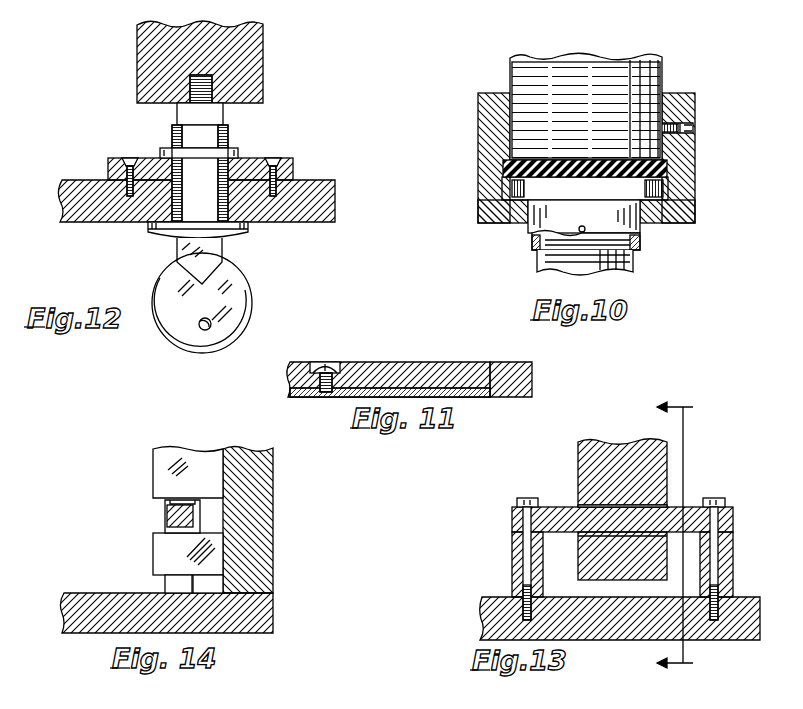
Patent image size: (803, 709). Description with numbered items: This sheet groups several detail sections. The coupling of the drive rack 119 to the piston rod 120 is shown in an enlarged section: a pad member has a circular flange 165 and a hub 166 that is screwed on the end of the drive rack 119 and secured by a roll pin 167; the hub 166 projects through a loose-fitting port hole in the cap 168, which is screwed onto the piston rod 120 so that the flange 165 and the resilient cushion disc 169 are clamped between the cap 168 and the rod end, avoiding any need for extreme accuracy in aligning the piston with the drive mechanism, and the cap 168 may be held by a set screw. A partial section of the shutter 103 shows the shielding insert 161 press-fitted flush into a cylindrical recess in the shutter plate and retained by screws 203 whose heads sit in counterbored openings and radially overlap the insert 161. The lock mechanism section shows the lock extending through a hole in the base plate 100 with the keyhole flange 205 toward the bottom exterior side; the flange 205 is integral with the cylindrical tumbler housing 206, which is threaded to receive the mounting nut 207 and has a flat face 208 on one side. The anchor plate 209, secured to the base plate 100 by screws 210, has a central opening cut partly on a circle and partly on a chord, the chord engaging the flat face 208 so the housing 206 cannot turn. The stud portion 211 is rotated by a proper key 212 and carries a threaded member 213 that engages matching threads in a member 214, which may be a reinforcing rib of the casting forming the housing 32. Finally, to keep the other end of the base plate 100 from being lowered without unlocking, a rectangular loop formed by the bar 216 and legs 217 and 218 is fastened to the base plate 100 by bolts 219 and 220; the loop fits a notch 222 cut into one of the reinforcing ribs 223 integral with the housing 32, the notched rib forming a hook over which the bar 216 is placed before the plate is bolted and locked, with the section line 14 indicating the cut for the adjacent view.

In FIG. 12, the base plate 100 is at (90, 212).
In FIG. 14, the base plate 100 is at (267, 623).
In FIG. 13, the base plate 100 is at (502, 608).
In FIG. 12, the member 214 is at (257, 53).
In FIG. 12, the threaded member 213 is at (213, 82).
In FIG. 12, the stud portion 211 is at (220, 115).
In FIG. 12, the flat face 208 is at (200, 138).
In FIG. 12, the cylindrical tumbler housing 206 is at (230, 135).
In FIG. 12, the mounting nut 207 is at (237, 153).
In FIG. 12, the anchor plate 209 is at (107, 163).
In FIG. 12, the screws 210 is at (133, 157).
In FIG. 12, the keyhole flange 205 is at (233, 237).
In FIG. 12, the key 212 is at (240, 299).
In FIG. 10, the piston rod 120 is at (515, 67).
In FIG. 10, the cap 168 is at (687, 148).
In FIG. 10, the resilient cushion disc 169 is at (500, 167).
In FIG. 10, the circular flange 165 is at (510, 187).
In FIG. 10, the roll pin 167 is at (580, 230).
In FIG. 10, the hub 166 is at (640, 243).
In FIG. 10, the drive rack 119 is at (633, 265).
In FIG. 11, the screws 203 is at (329, 366).
In FIG. 11, the shielding insert 161 is at (400, 362).
In FIG. 11, the shutter 103 is at (532, 383).
In FIG. 14, the reinforcing rib 223 is at (163, 472).
In FIG. 13, the reinforcing rib 223 is at (583, 467).
In FIG. 14, the notch 222 is at (200, 505).
In FIG. 13, the notch 222 is at (668, 505).
In FIG. 14, the bar 216 is at (165, 512).
In FIG. 13, the bar 216 is at (513, 515).
In FIG. 14, the housing 32 is at (267, 557).
In FIG. 14, the leg 217 is at (167, 585).
In FIG. 13, the leg 217 is at (512, 547).
In FIG. 13, the bolt 219 is at (520, 500).
In FIG. 13, the bolt 220 is at (720, 497).
In FIG. 13, the leg 218 is at (727, 577).
In FIG. 13, the section line 14 is at (656, 535).